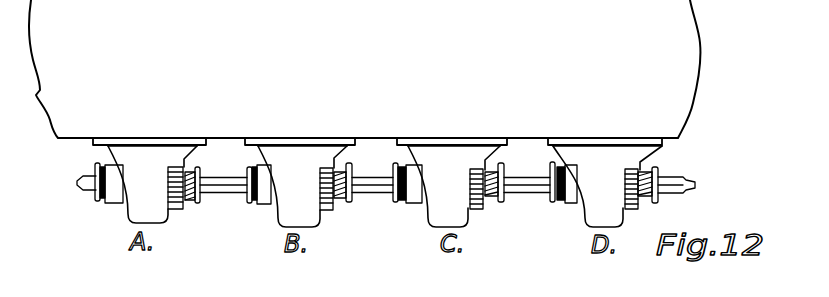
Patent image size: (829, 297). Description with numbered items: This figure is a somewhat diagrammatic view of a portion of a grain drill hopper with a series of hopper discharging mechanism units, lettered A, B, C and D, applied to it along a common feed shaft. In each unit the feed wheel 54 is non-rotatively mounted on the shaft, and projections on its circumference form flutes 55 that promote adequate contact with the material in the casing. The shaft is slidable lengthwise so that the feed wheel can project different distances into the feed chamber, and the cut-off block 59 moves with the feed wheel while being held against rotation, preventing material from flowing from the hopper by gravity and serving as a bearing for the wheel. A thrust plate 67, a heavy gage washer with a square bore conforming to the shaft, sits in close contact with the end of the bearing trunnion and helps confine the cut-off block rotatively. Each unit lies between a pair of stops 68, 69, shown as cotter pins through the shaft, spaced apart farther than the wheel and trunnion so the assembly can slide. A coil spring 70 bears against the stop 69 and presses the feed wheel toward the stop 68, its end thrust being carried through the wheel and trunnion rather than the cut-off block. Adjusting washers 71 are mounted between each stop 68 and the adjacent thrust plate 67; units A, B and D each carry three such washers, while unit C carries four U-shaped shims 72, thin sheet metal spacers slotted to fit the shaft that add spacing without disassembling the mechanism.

The stop 68 is at (100, 205).
The adjusting washer 71 is at (106, 203).
The coil spring 70 is at (189, 205).
The thrust plate 67 is at (257, 206).
The stop 69 is at (350, 200).
The U-shaped shim 72 is at (396, 200).
The feed wheel 54 is at (478, 208).
The cut-off block 59 is at (573, 198).
The flutes 55 is at (695, 185).